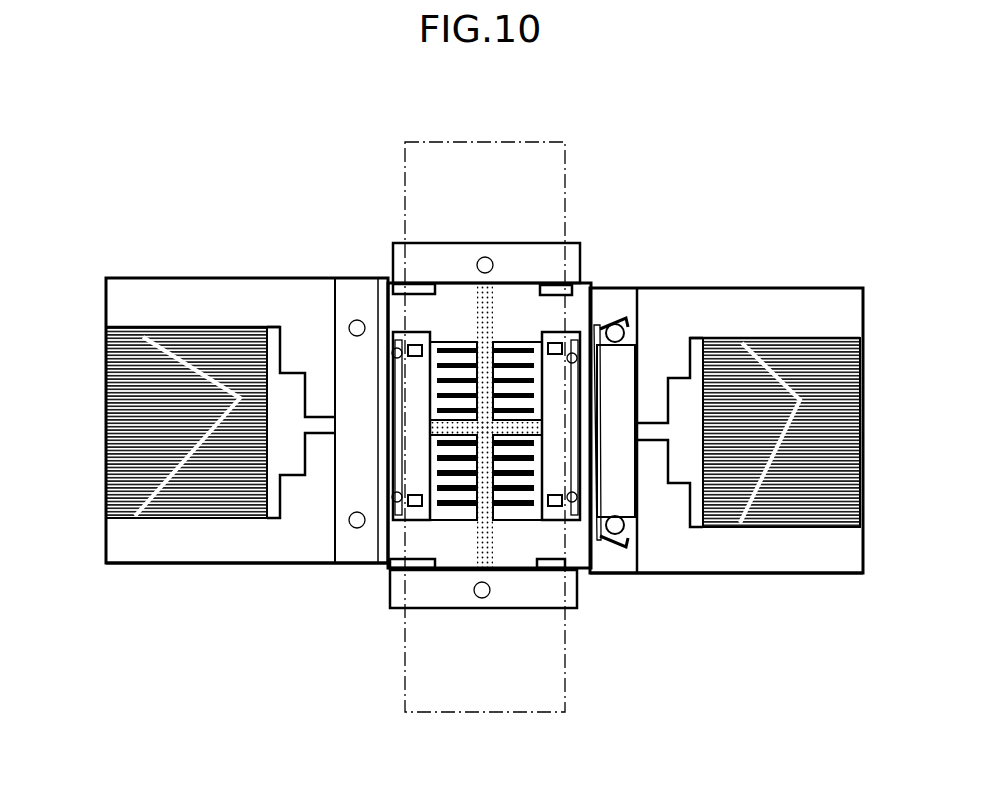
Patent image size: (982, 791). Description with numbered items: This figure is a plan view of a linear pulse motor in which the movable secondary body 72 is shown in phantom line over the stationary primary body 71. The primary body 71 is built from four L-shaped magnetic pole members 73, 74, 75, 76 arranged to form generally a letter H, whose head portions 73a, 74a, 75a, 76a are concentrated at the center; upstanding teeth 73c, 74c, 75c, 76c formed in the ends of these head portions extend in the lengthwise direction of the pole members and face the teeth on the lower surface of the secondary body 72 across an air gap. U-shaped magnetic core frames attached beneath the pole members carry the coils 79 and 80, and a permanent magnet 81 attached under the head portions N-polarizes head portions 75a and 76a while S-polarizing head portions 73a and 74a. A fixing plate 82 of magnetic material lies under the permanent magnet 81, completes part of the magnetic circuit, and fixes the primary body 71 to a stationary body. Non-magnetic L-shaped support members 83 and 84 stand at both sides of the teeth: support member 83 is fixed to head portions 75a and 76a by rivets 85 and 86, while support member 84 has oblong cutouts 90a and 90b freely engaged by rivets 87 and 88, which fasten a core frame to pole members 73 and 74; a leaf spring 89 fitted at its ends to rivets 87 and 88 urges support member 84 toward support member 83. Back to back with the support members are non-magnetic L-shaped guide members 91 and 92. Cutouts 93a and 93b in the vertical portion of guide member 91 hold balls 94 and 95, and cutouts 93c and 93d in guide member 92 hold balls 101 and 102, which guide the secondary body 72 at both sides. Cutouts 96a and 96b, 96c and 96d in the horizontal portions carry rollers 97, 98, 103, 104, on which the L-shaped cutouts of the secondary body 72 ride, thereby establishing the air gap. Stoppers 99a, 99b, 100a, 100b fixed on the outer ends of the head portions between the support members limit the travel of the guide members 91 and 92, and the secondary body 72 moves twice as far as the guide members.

The primary body 71 is at (343, 173).
The secondary body 72 is at (568, 153).
The magnetic pole member 73 is at (756, 302).
The head portion 73a is at (658, 302).
The teeth 73c is at (507, 247).
The magnetic pole member 74 is at (775, 550).
The head portion 74a is at (657, 556).
The teeth 74c is at (520, 590).
The magnetic pole member 75 is at (157, 298).
The head portion 75a is at (275, 295).
The teeth 75c is at (468, 247).
The magnetic pole member 76 is at (152, 540).
The head portion 76a is at (325, 542).
The teeth 76c is at (485, 558).
The coil 79 is at (852, 548).
The coil 80 is at (188, 522).
The permanent magnet 81 is at (483, 600).
The fixing plate 82 is at (425, 600).
The support member 83 is at (306, 540).
The support member 84 is at (601, 556).
The rivet 85 is at (356, 318).
The rivet 86 is at (357, 530).
The rivet 87 is at (600, 330).
The rivet 88 is at (612, 556).
The leaf spring 89 is at (600, 357).
The oblong cutout 90a is at (626, 333).
The oblong cutout 90b is at (628, 538).
The guide member 91 is at (410, 430).
The guide member 92 is at (582, 434).
The cutout 93a is at (393, 345).
The cutout 93b is at (422, 581).
The cutout 93c is at (625, 343).
The cutout 93d is at (600, 497).
The ball 94 is at (392, 353).
The ball 95 is at (392, 497).
The cutout 96a is at (436, 348).
The cutout 96b is at (437, 506).
The cutout 96c is at (556, 296).
The cutout 96d is at (626, 527).
The roller 97 is at (410, 362).
The roller 98 is at (404, 492).
The stopper 99a is at (553, 572).
The stopper 99b is at (393, 572).
The stopper 100a is at (585, 285).
The stopper 100b is at (397, 285).
The ball 101 is at (615, 431).
The ball 102 is at (615, 462).
The roller 103 is at (548, 350).
The roller 104 is at (550, 506).